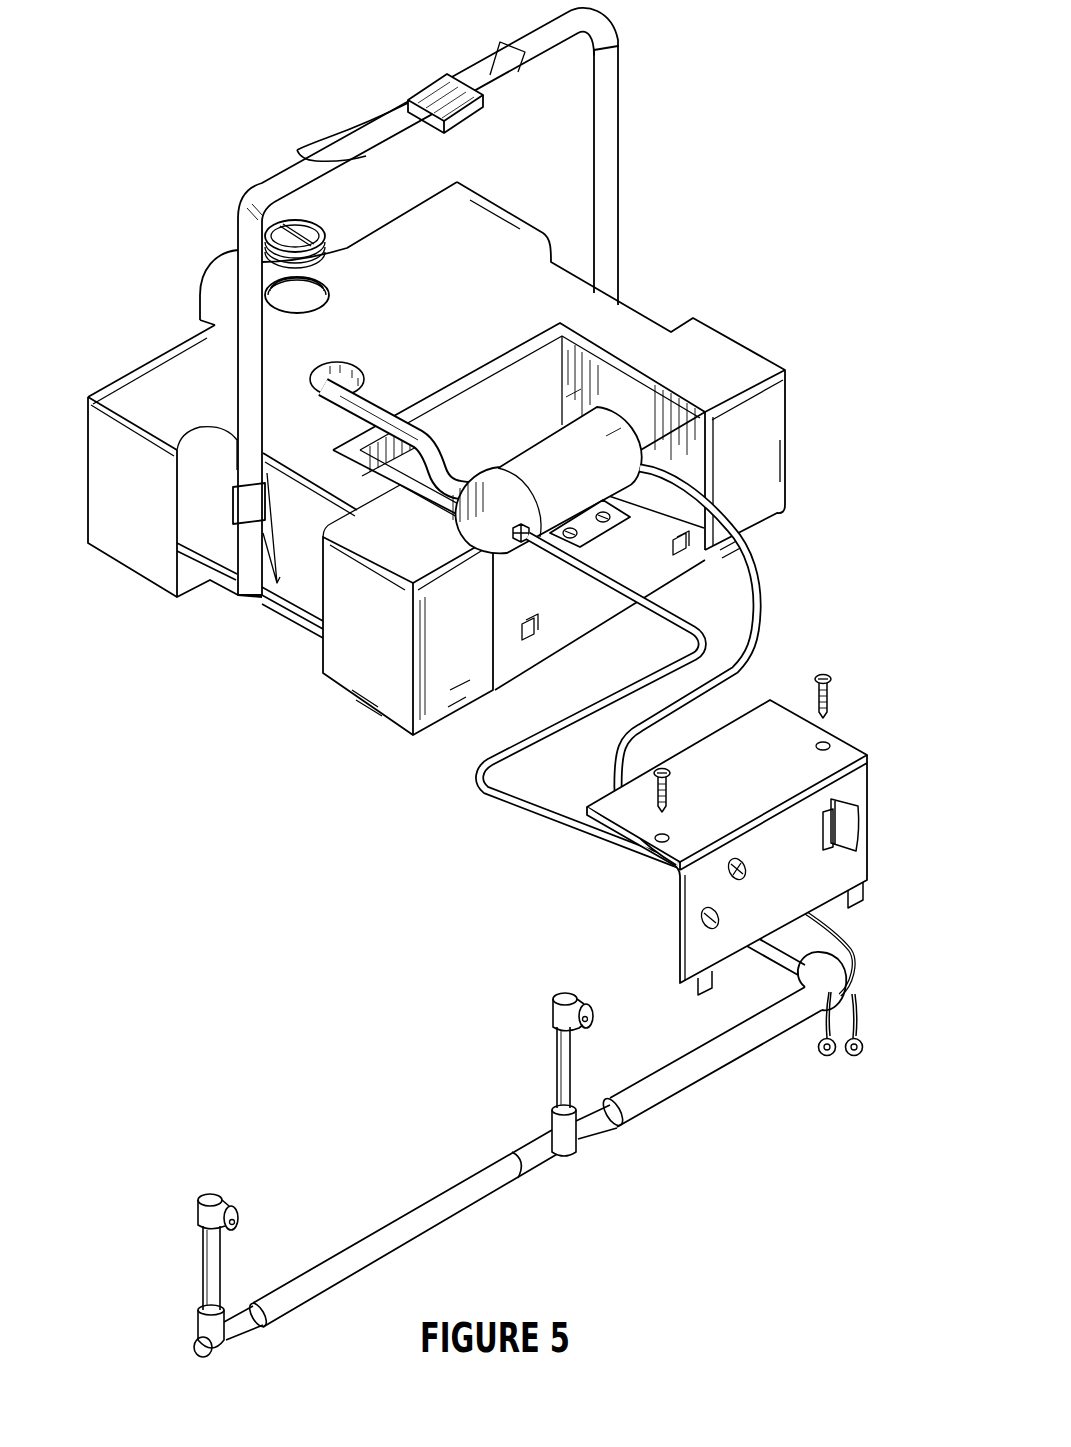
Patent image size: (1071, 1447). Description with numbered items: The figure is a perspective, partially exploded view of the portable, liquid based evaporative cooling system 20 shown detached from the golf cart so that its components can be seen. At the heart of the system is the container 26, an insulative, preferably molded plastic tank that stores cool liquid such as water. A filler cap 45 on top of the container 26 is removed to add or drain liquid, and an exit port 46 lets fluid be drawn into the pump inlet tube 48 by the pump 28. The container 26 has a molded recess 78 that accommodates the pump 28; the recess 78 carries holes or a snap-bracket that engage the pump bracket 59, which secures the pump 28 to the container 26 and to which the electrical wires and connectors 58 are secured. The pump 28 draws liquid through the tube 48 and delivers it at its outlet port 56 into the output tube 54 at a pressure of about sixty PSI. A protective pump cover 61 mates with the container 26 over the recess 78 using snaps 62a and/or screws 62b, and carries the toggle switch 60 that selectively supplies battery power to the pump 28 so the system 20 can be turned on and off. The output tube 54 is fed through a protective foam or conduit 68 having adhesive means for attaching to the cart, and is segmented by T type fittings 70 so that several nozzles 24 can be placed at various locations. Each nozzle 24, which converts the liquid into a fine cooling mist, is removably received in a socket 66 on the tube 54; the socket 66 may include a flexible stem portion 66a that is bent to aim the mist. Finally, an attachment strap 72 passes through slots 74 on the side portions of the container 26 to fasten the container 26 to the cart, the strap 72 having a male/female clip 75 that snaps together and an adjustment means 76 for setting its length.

The evaporative cooling system 20 is at (755, 188).
The nozzles 24 is at (589, 1002).
The container 26 is at (790, 443).
The pump 28 is at (487, 462).
The filler cap 45 is at (310, 232).
The exit port 46 is at (337, 366).
The pump inlet tube 48 is at (385, 407).
The output tube 54 is at (593, 850).
The outlet port 56 is at (535, 512).
The electrical wires and connectors 58 is at (824, 1066).
The pump bracket 59 is at (605, 538).
The toggle switch 60 is at (838, 792).
The protective pump cover 61 is at (870, 846).
The snaps 62a is at (868, 896).
The screws 62b is at (834, 693).
The sockets 66 is at (553, 1010).
The stem portion 66a is at (560, 1067).
The protective foam or conduit 68 is at (657, 1077).
The T type fittings 70 is at (570, 1120).
The attachment strap 72 is at (467, 371).
The slots 74 is at (249, 600).
The male/female clip 75 is at (410, 103).
The adjustment means 76 is at (368, 118).
The molded recess 78 is at (582, 598).